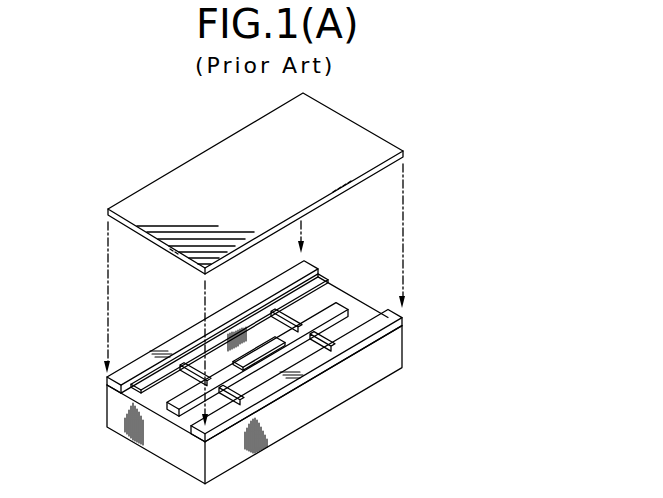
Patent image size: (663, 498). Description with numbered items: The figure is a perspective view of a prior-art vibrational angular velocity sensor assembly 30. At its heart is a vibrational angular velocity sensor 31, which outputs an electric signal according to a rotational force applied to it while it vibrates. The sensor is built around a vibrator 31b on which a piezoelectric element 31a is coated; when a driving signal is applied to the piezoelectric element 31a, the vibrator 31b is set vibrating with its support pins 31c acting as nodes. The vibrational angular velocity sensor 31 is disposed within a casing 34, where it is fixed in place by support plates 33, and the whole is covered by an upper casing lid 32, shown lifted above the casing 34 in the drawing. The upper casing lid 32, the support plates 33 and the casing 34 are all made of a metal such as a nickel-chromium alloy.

The vibrational angular velocity sensor assembly 30 is at (425, 197).
The vibrational angular velocity sensor 31 is at (300, 345).
The piezoelectric element 31a is at (318, 286).
The vibrator 31b is at (333, 298).
The support pins 31c is at (335, 334).
The upper casing lid 32 is at (392, 150).
The support plates 33 is at (116, 378).
The casing 34 is at (177, 455).